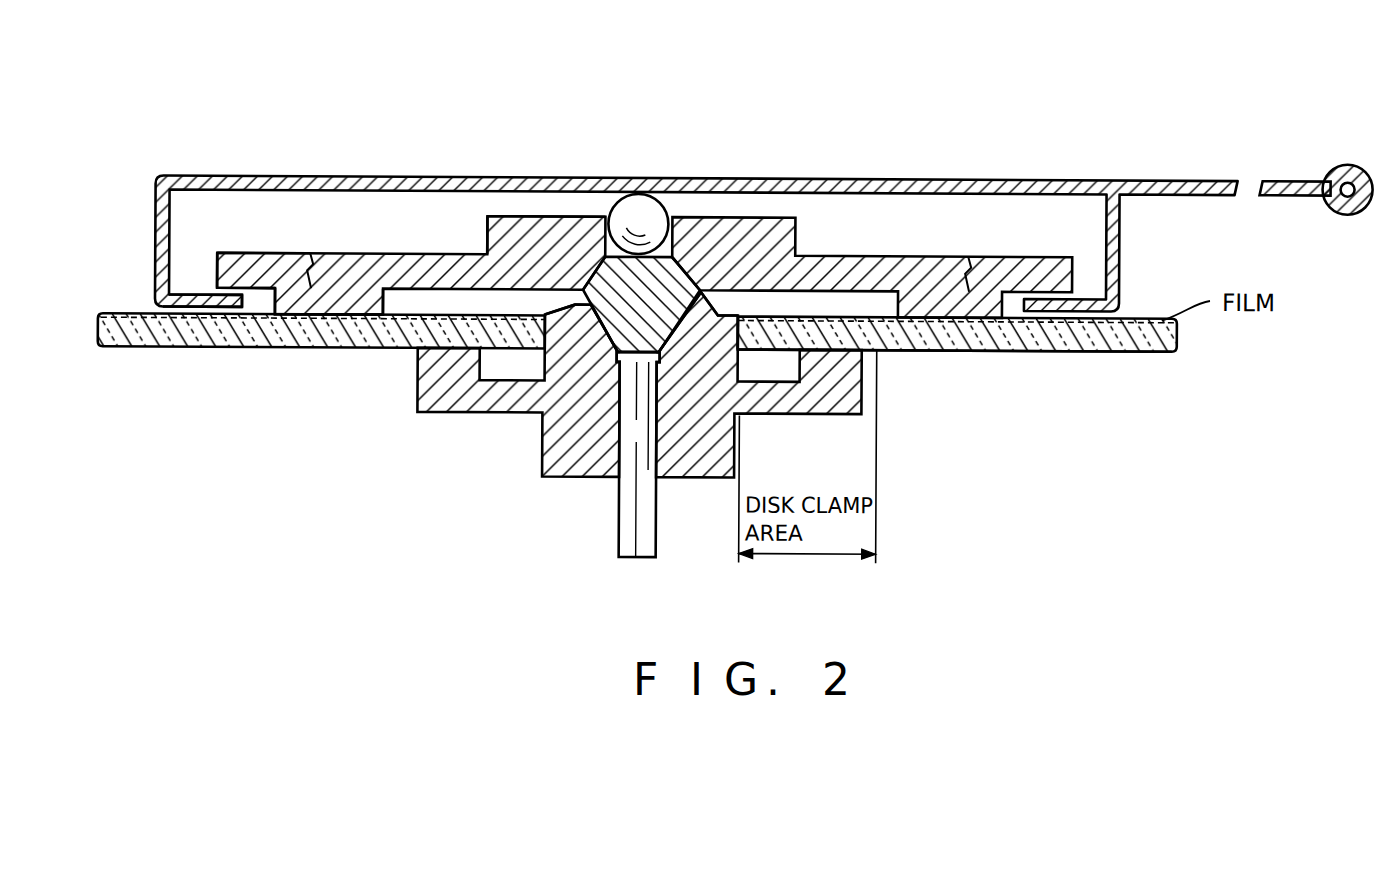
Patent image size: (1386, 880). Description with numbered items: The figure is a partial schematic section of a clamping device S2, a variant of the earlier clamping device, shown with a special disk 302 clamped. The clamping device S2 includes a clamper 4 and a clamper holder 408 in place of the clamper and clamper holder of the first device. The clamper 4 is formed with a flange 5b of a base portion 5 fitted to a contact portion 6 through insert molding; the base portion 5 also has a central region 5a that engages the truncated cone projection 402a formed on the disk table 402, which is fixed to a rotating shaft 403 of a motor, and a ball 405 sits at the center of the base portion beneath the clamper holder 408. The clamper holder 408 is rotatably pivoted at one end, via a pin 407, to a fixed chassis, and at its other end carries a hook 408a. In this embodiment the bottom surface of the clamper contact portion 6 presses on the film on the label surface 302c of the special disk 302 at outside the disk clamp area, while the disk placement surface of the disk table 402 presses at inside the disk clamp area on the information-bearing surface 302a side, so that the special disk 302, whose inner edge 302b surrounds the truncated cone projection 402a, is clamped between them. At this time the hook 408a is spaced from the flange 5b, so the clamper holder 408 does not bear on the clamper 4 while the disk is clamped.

The clamper 4 is at (423, 252).
The base portion 5 is at (372, 253).
The center cone of hub 5a is at (630, 333).
The flange 5b is at (330, 253).
The contact portion 6 is at (312, 295).
The special disk 302 is at (1013, 338).
The information-bearing surface 302a is at (1138, 353).
The inner edge of film 302b is at (736, 325).
The label surface 302c is at (1146, 310).
The disk table 402 is at (500, 395).
The truncated cone projection 402a is at (573, 302).
The rotating shaft 403 is at (628, 503).
The ball 405 is at (641, 203).
The pin 407 is at (1346, 180).
The clamper holder 408 is at (487, 177).
The hook 408a is at (213, 300).
The clamping device S2 is at (907, 128).